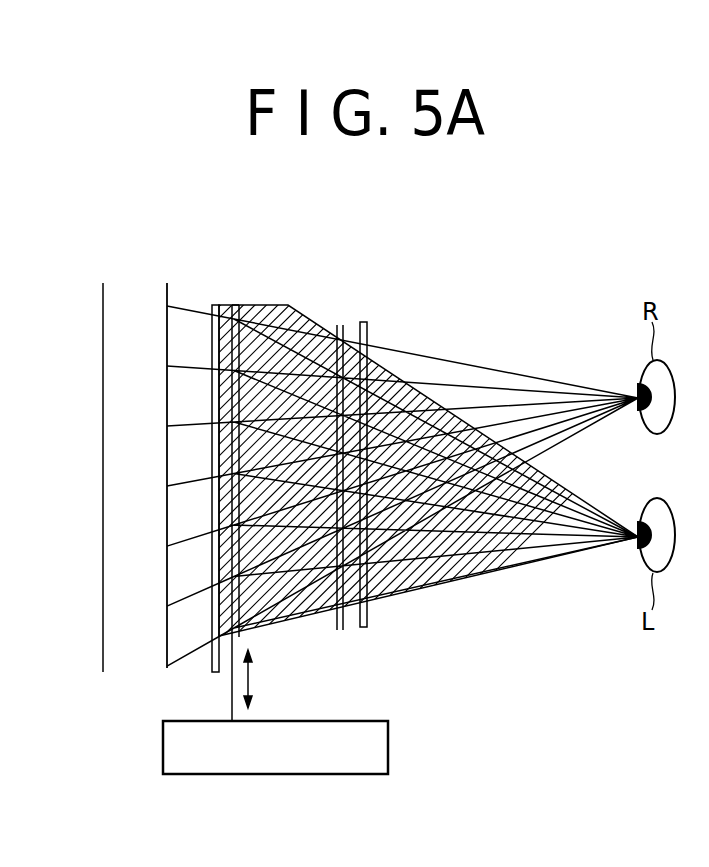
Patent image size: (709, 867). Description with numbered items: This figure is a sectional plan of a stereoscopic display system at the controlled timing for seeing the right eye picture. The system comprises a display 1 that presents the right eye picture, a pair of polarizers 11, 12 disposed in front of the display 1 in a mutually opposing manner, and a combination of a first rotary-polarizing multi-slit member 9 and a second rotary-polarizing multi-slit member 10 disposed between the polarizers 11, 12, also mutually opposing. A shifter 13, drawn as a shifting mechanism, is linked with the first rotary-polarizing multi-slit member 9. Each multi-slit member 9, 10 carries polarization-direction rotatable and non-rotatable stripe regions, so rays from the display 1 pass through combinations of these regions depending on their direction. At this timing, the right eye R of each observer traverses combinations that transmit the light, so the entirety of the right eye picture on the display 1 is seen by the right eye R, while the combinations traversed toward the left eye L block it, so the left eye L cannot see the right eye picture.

The display 1 is at (167, 290).
The first rotary-polarizing multi-slit member 9 is at (239, 305).
The second rotary-polarizing multi-slit member 10 is at (343, 332).
The polarizer 11 is at (212, 305).
The polarizer 12 is at (367, 332).
The shifter 13 is at (388, 752).